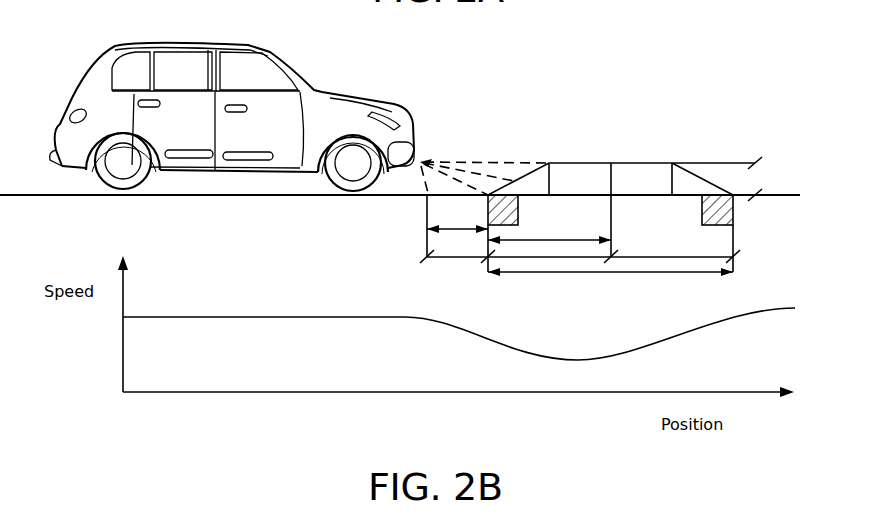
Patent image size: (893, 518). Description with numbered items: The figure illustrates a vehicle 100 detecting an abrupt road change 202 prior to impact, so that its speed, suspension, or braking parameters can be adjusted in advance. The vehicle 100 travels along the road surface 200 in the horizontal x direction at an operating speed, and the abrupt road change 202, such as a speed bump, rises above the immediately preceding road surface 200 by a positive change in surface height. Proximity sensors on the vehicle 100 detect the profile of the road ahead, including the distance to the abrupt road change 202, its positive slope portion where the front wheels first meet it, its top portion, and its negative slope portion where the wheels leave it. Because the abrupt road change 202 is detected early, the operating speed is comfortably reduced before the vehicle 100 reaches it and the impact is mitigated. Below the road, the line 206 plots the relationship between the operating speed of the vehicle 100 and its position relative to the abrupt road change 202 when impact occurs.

The vehicle 100 is at (87, 48).
The road surface 200 is at (86, 197).
The abrupt road change 202 is at (636, 163).
The line 206 is at (377, 318).